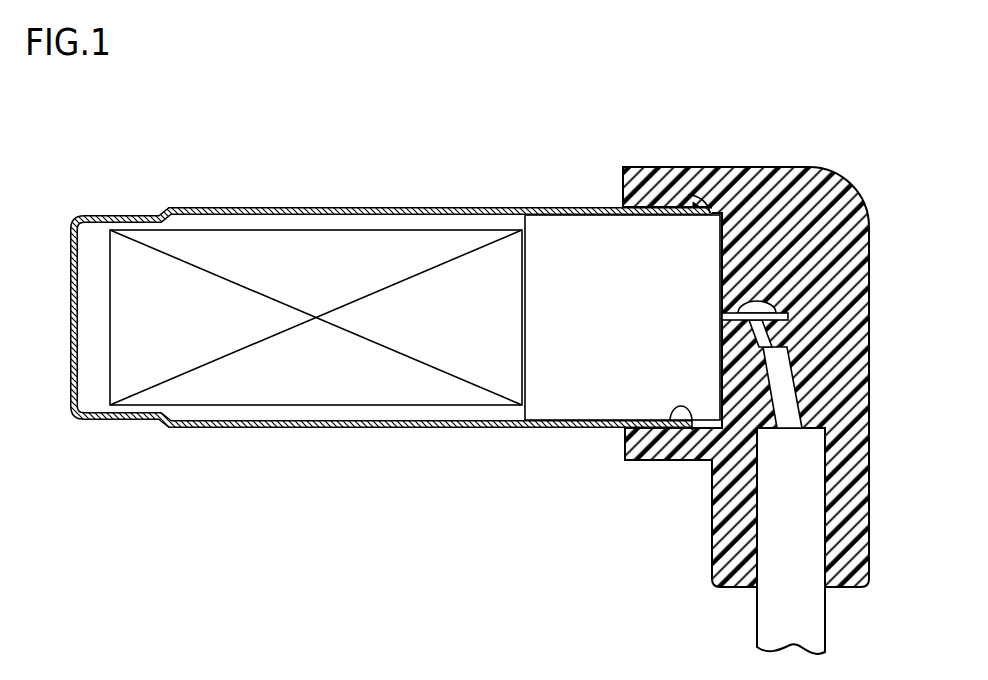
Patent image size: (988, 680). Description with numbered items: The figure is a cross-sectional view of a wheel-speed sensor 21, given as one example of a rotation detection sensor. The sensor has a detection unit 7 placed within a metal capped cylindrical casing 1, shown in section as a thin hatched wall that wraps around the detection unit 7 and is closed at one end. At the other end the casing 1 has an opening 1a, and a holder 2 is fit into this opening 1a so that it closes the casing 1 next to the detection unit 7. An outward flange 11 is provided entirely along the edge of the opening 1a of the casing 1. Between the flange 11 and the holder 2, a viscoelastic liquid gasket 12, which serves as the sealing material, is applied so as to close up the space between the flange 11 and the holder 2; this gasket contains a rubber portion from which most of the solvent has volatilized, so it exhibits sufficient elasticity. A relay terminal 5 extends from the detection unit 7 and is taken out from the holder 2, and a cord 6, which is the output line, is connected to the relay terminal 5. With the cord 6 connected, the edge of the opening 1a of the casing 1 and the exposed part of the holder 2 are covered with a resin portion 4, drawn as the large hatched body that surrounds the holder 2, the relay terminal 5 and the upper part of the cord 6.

The casing 1 is at (226, 205).
The opening 1a is at (670, 425).
The holder 2 is at (585, 247).
The resin portion 4 is at (832, 328).
The relay terminal 5 is at (780, 310).
The cord 6 is at (795, 490).
The detection unit 7 is at (338, 250).
The outward flange 11 is at (693, 200).
The viscoelastic liquid gasket 12 is at (720, 198).
The wheel-speed sensor 21 is at (448, 197).